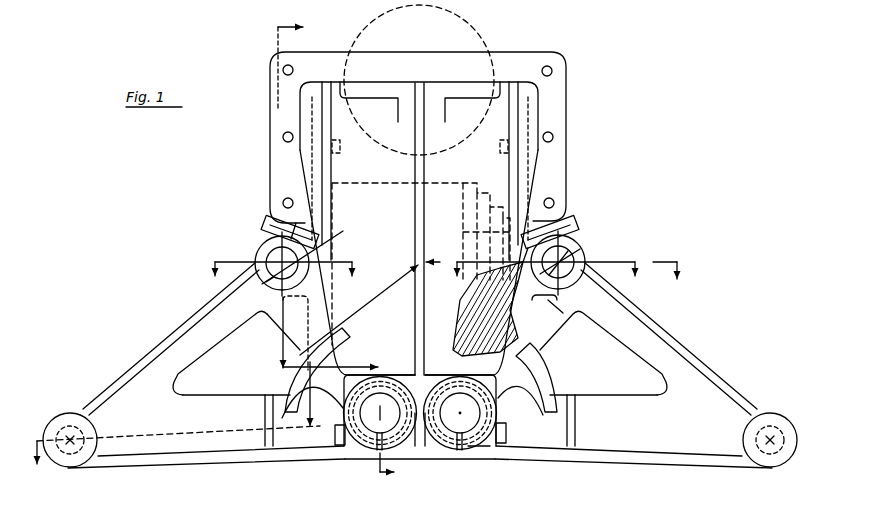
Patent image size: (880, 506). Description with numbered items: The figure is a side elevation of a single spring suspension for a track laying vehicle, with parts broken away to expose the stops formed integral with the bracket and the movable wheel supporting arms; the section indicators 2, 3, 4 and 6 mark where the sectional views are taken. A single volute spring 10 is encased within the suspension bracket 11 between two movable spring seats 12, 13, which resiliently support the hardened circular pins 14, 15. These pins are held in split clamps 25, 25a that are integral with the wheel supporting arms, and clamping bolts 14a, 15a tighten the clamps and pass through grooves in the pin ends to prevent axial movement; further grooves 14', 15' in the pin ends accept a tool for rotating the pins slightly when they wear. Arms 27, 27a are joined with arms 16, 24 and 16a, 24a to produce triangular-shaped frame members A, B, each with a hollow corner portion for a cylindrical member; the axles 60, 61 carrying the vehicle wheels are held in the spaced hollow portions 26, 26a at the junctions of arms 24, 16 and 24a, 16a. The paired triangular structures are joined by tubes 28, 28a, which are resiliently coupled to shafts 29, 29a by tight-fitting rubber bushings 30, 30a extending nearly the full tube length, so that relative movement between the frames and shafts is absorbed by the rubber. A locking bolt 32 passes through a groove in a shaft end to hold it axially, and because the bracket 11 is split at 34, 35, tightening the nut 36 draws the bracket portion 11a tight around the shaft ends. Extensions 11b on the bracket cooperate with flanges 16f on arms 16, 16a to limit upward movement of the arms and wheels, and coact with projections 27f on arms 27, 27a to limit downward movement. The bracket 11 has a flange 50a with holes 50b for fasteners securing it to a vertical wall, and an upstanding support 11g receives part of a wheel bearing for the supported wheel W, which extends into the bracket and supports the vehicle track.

The volute spring 10 is at (419, 228).
The suspension bracket 11 is at (421, 253).
The suspension bracket portion 11a is at (476, 448).
The extension 11b is at (287, 378).
The upstanding support 11g is at (433, 90).
The spring seat 12 is at (507, 309).
The spring seat 13 is at (304, 230).
The pin 14 is at (573, 263).
The groove 14' is at (563, 280).
The clamping bolt 14a is at (568, 222).
The pin 15 is at (270, 264).
The groove 15' is at (254, 291).
The clamping bolt 15a is at (268, 226).
The arm 16 is at (653, 444).
The arm 16a is at (199, 448).
The flange 16f is at (285, 450).
The wheel supporting arm 24 is at (657, 316).
The wheel supporting arm 24a is at (169, 322).
The split clamp 25 is at (573, 277).
The split clamp 25a is at (315, 249).
The hollow portion 26 is at (752, 430).
The hollow portion 26a is at (90, 427).
The arm 27 is at (563, 313).
The arm 27a is at (288, 325).
The projection 27f is at (316, 318).
The tube 28 is at (478, 434).
The tube 28a is at (398, 446).
The shaft 29 is at (474, 413).
The shaft 29a is at (387, 403).
The rubber bushing 30 is at (481, 430).
The rubber bushing 30a is at (402, 416).
The locking bolt 32 is at (341, 440).
The split 34 is at (377, 448).
The split 35 is at (459, 451).
The nut 36 is at (507, 433).
The flange 50a is at (323, 62).
The holes 50b is at (283, 70).
The axle 60 is at (775, 449).
The axle 61 is at (73, 450).
The wheel W is at (468, 37).
The triangular-shaped frame member A is at (171, 355).
The triangular-shaped frame member B is at (683, 369).
The section line 2- 2 is at (328, 253).
The section line 3- 3 is at (283, 261).
The section line 4- 4 is at (545, 261).
The section line 6- 6 is at (359, 357).